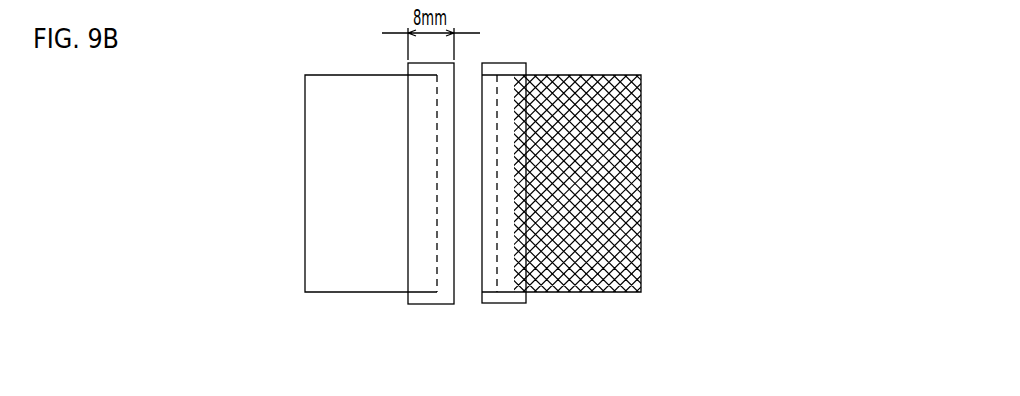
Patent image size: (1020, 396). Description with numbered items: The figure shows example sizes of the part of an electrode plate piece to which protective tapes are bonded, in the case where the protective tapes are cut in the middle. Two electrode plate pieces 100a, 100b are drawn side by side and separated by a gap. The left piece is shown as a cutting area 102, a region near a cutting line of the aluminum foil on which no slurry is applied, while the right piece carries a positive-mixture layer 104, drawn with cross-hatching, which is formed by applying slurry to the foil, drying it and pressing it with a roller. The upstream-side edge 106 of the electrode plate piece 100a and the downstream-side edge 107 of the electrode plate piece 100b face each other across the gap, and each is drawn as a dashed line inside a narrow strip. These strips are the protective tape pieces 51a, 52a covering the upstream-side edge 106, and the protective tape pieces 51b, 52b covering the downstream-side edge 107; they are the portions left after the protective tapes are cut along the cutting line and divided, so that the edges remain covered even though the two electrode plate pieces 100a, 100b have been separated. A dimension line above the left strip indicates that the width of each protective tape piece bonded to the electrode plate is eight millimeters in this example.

The electrode plate piece 100a is at (338, 224).
The electrode plate piece 100b is at (575, 224).
The cutting area 102 is at (315, 253).
The positive-mixture layer 104 is at (637, 245).
The upstream-side edge 106 is at (437, 160).
The downstream-side edge 107 is at (497, 157).
The protective tape piece 51a is at (408, 224).
The protective tape piece 52a is at (436, 311).
The protective tape piece 51b is at (536, 224).
The protective tape piece 52b is at (498, 313).